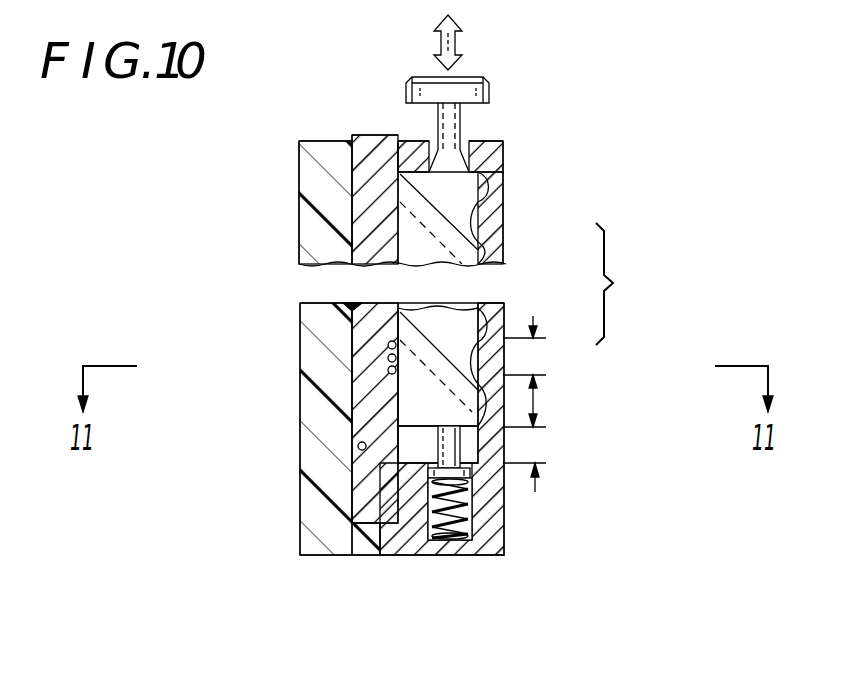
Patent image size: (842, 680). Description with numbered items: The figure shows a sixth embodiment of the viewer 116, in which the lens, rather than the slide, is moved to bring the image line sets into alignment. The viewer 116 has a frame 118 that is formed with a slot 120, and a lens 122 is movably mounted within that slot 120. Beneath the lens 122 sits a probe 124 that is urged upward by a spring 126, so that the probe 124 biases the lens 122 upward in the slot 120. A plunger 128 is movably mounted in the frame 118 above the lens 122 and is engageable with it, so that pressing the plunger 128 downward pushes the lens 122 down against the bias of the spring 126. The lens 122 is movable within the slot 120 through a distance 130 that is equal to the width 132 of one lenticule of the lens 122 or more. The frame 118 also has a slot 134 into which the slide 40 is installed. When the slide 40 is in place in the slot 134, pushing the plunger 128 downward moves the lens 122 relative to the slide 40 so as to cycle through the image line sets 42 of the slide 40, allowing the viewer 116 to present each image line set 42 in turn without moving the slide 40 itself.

The plunger 128 is at (489, 90).
The slot 120 is at (479, 192).
The lens 122 is at (479, 220).
The slide 40 is at (368, 303).
The image line sets 42 is at (386, 352).
The width of one lenticule 132 is at (535, 382).
The distance 130 is at (535, 417).
The slot 134 is at (358, 446).
The probe 124 is at (462, 445).
The spring 126 is at (473, 510).
The frame 118 is at (303, 556).
The viewer 116 is at (398, 556).